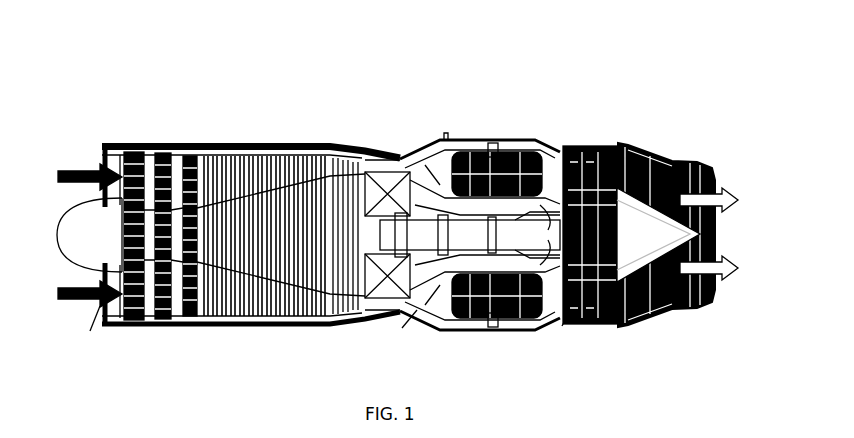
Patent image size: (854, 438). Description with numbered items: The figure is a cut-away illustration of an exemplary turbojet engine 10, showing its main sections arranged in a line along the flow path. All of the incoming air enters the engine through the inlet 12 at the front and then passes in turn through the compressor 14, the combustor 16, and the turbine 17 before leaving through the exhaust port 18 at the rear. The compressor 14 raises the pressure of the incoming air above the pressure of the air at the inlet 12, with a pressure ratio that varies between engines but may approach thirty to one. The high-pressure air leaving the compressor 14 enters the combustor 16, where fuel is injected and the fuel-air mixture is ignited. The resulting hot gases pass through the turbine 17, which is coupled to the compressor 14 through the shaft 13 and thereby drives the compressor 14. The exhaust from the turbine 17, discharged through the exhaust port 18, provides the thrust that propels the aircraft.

The turbojet engine 10 is at (349, 42).
The inlet 12 is at (103, 157).
The shaft 13 is at (507, 233).
The compressor 14 is at (267, 108).
The combustor 16 is at (490, 113).
The turbine 17 is at (604, 105).
The exhaust port 18 is at (722, 183).